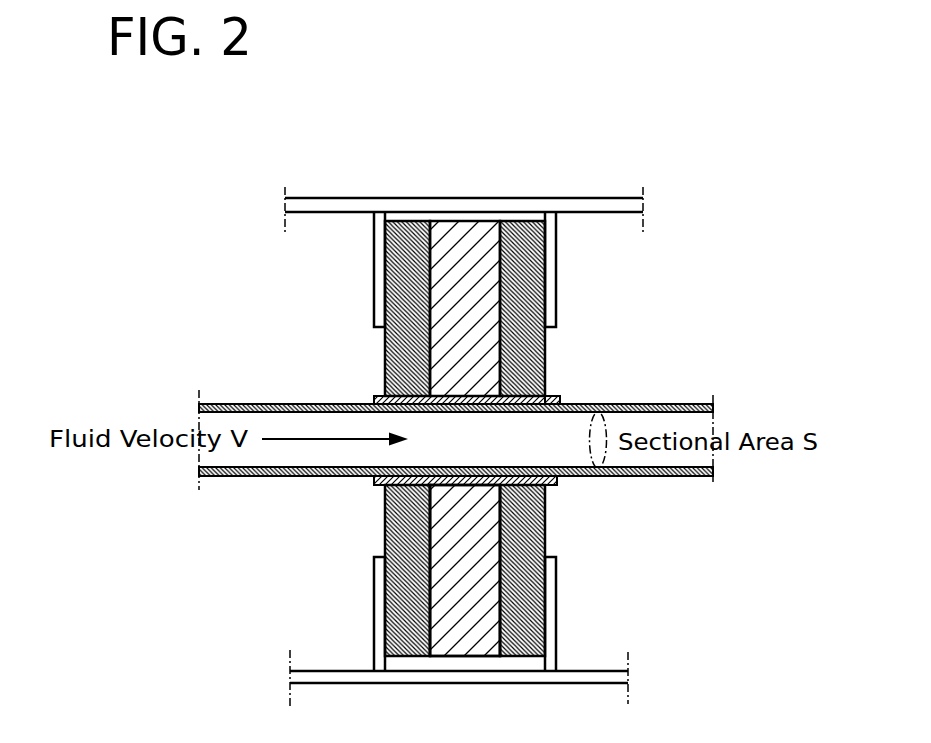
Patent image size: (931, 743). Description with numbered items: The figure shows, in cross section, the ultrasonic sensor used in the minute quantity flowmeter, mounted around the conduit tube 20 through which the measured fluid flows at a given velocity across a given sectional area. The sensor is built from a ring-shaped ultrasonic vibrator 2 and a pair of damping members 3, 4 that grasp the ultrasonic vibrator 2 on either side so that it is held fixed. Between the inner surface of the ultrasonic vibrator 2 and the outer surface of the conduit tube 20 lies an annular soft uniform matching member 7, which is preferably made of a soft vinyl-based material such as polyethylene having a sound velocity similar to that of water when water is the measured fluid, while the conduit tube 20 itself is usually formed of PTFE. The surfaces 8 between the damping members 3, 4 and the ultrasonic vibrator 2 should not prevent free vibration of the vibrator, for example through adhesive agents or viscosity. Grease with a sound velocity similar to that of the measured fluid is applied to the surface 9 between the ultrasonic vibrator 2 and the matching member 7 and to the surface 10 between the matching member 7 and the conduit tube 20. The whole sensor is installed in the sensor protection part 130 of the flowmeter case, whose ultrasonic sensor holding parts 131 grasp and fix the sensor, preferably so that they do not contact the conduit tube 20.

The ultrasonic vibrator 2 is at (465, 240).
The damping member 3 is at (403, 230).
The damping member 4 is at (520, 245).
The matching member 7 is at (383, 395).
The surfaces 8 is at (427, 572).
The surface 9 is at (473, 487).
The surface 10 is at (548, 396).
The conduit tube 20 is at (633, 478).
The sensor protection part 130 is at (578, 208).
The ultrasonic sensor holding part 131 is at (372, 260).